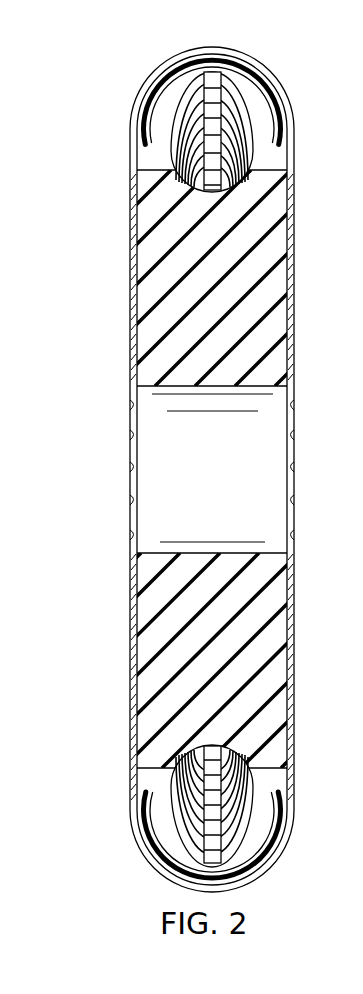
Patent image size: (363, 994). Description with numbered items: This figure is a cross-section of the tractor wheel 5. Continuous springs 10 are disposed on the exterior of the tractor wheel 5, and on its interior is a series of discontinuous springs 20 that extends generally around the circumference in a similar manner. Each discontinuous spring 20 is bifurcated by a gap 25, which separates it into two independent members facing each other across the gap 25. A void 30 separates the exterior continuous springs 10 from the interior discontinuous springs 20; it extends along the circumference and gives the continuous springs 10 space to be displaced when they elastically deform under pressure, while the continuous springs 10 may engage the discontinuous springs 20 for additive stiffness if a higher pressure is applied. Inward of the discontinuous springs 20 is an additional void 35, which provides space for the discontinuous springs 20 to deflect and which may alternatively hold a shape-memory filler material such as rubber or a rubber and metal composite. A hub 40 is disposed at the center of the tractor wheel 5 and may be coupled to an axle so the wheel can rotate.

The tractor wheel 5 is at (113, 90).
The continuous springs 10 is at (150, 852).
The discontinuous springs 20 is at (152, 810).
The gap 25 is at (214, 82).
The void 30 is at (258, 862).
The void 35 is at (188, 150).
The hub 40 is at (295, 352).